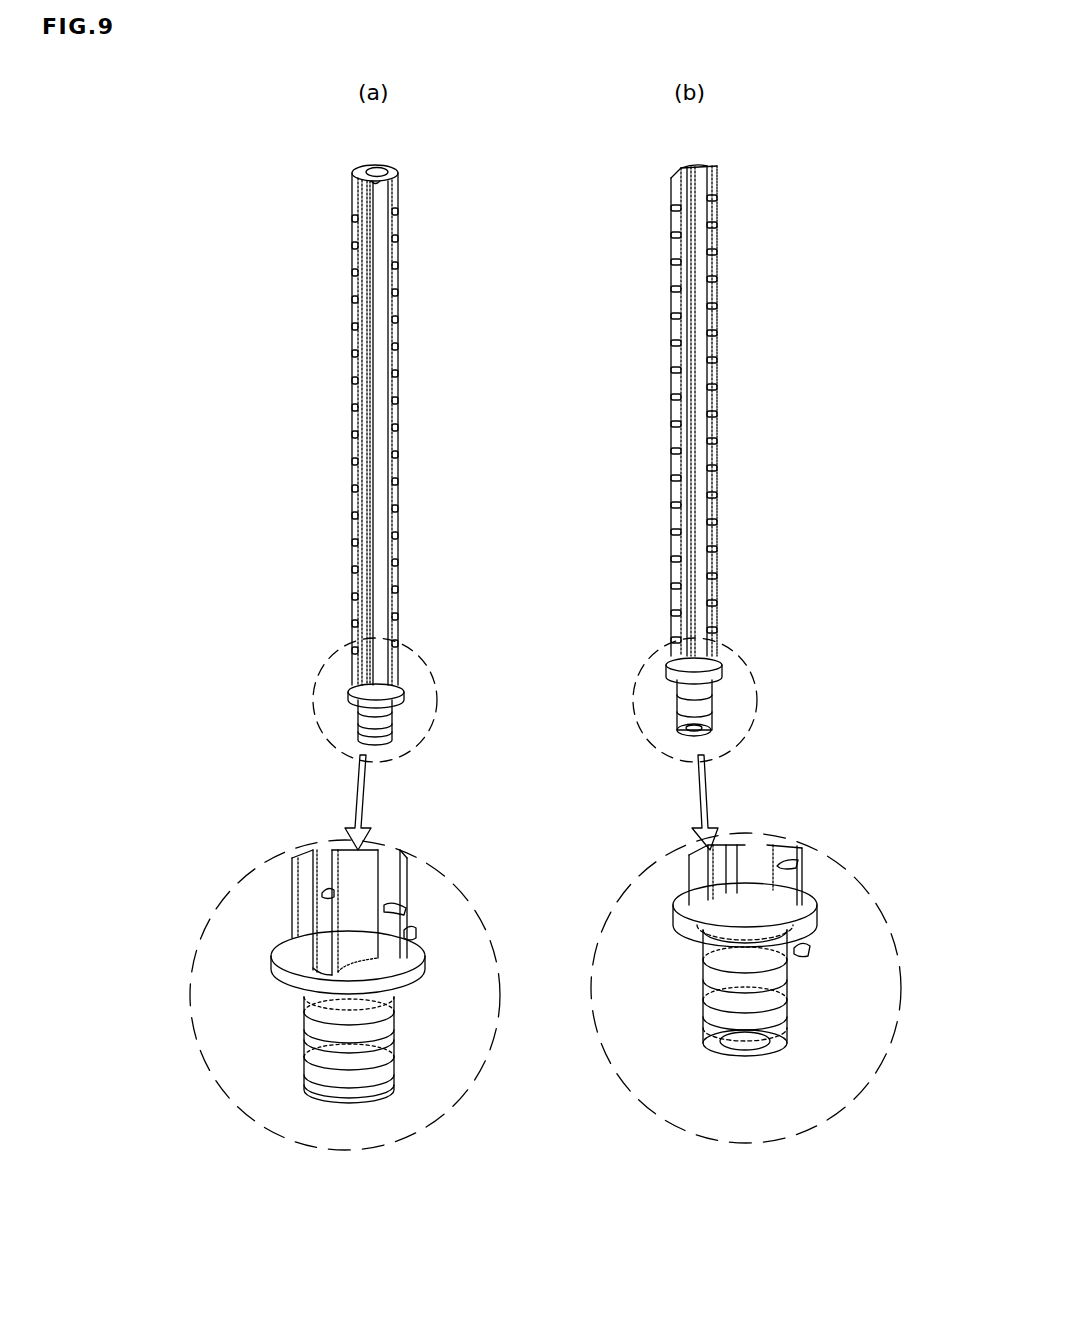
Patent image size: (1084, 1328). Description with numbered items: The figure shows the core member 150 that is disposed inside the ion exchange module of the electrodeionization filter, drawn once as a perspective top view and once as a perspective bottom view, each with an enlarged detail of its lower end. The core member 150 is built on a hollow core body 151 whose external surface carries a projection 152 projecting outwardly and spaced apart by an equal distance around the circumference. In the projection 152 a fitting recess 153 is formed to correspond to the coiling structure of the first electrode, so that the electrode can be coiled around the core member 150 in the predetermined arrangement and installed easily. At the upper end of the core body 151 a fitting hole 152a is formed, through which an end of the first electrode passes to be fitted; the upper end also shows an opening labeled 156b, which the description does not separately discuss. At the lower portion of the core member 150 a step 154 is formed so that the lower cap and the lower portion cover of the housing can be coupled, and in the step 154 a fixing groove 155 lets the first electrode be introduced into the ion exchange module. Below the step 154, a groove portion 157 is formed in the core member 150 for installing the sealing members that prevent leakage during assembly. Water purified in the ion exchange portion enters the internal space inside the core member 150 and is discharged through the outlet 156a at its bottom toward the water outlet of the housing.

The core member 150 is at (245, 294).
The core body 151 is at (355, 288).
The projection 152 is at (355, 362).
The fitting hole 152a is at (383, 200).
The fitting recess 153 is at (355, 318).
The step 154 is at (352, 692).
The fixing groove 155 is at (418, 933).
The outlet 156a is at (695, 730).
The upper opening 156b is at (381, 173).
The groove portion 157 is at (310, 1030).